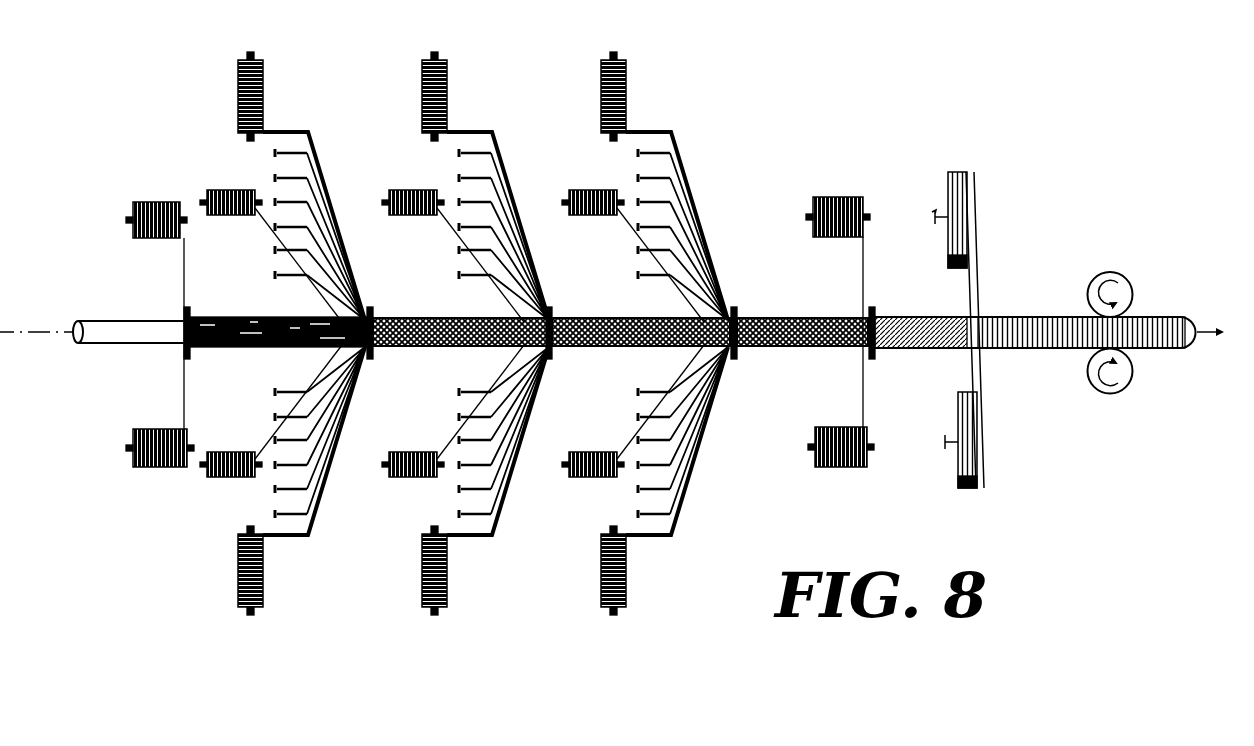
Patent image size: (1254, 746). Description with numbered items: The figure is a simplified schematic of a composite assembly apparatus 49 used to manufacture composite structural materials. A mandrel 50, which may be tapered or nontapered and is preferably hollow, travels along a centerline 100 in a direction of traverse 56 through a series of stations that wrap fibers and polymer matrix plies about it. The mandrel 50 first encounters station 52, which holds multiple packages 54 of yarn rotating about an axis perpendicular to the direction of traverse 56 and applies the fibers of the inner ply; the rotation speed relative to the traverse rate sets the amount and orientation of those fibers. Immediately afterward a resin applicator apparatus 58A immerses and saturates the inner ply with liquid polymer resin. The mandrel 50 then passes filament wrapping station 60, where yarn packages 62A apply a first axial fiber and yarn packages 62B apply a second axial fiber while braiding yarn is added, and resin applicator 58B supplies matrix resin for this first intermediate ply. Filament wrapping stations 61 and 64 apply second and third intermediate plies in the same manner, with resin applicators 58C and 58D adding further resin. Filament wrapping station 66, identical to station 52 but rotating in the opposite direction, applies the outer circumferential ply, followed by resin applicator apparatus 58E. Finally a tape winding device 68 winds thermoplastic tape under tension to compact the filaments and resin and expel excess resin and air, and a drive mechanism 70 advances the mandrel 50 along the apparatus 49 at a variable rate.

The composite assembly apparatus 49 is at (797, 90).
The mandrel 50 is at (97, 346).
The station 52 is at (155, 196).
The packages of yarn 54 is at (143, 240).
The direction of traverse 56 is at (1202, 328).
The resin applicator apparatus 58A is at (187, 307).
The resin applicator 58B is at (370, 307).
The resin applicator 58C is at (549, 307).
The resin applicator 58D is at (735, 307).
The resin applicator apparatus 58E is at (873, 307).
The filament wrapping station 60 is at (250, 48).
The filament wrapping station 61 is at (434, 48).
The yarn packages 62A is at (234, 190).
The yarn packages 62B is at (264, 78).
The filament wrapping station 64 is at (616, 48).
The filament wrapping station 66 is at (846, 197).
The tape winding device 68 is at (968, 172).
The drive mechanism 70 is at (1118, 274).
The axis / centerline 100 is at (22, 328).